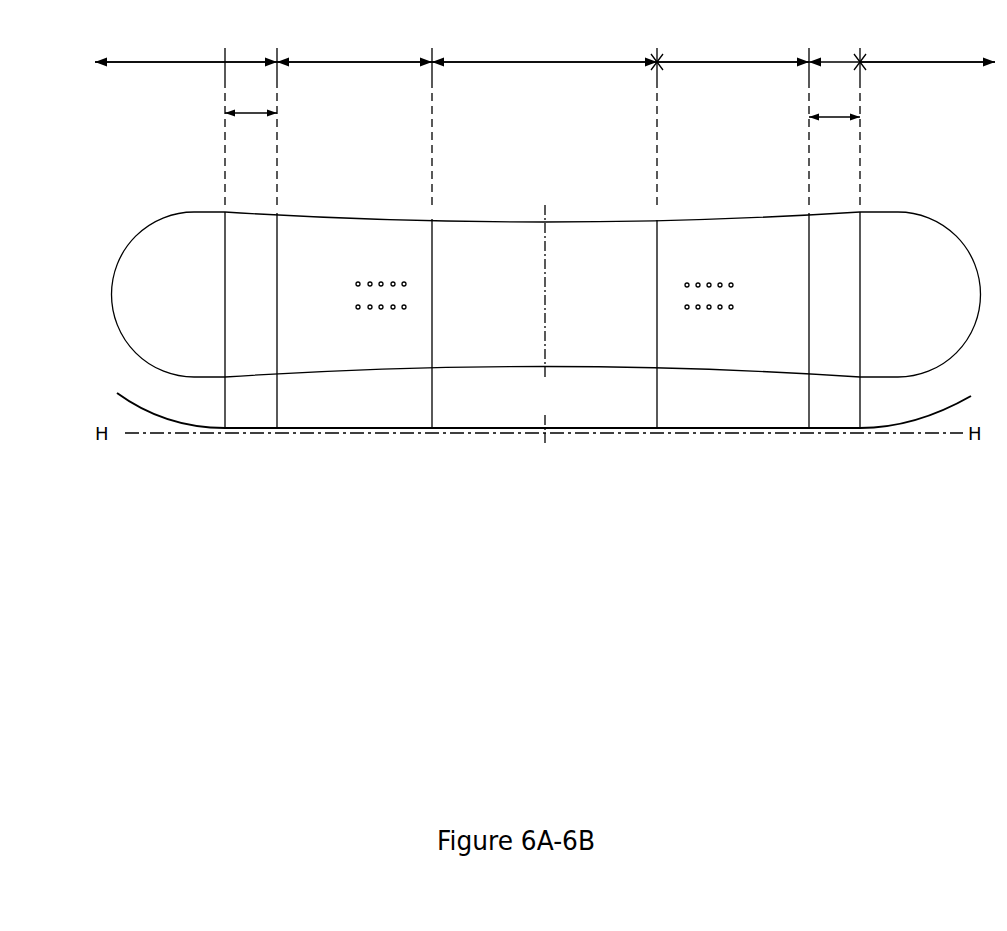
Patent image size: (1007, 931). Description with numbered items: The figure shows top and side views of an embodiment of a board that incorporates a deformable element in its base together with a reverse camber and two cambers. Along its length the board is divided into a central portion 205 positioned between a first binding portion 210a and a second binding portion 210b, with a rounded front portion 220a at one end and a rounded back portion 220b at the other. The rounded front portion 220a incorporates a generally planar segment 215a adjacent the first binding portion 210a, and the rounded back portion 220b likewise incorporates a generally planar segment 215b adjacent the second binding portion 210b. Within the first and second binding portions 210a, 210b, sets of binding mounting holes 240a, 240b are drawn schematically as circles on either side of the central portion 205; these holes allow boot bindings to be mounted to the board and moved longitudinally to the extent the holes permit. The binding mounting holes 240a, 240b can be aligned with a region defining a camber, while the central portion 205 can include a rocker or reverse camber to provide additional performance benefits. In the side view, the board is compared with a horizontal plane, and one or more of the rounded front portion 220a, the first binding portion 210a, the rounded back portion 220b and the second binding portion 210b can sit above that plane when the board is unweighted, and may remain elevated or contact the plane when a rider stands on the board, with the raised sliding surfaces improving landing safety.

The central portion 205 is at (544, 48).
The first binding portion 210a is at (354, 48).
The second binding portion 210b is at (733, 48).
The generally planar segment 215a is at (251, 103).
The generally planar segment 215b is at (834, 106).
The rounded front portion 220a is at (186, 48).
The rounded back portion 220b is at (927, 48).
The binding mounting holes 240a is at (356, 281).
The binding mounting holes 240b is at (707, 283).